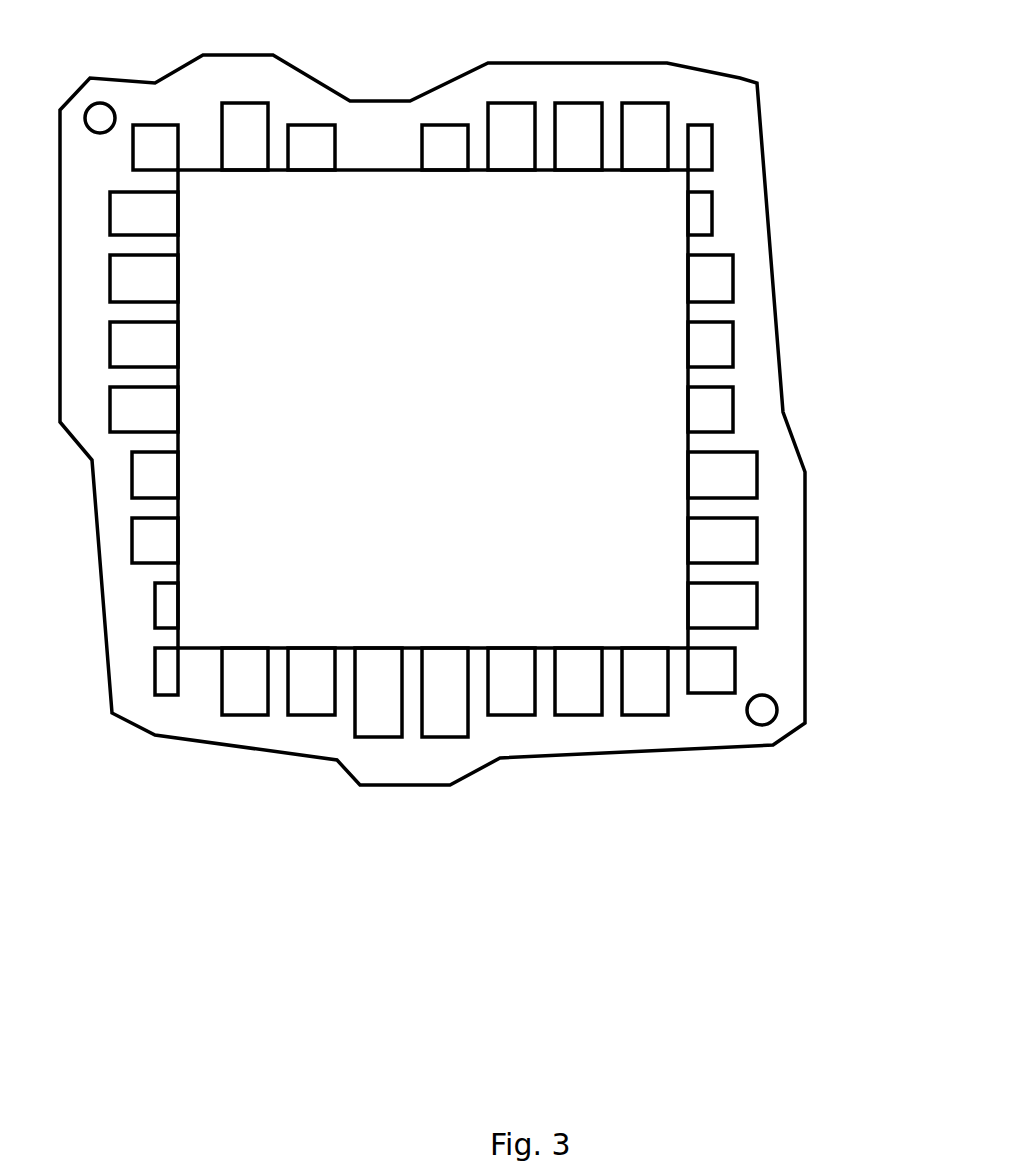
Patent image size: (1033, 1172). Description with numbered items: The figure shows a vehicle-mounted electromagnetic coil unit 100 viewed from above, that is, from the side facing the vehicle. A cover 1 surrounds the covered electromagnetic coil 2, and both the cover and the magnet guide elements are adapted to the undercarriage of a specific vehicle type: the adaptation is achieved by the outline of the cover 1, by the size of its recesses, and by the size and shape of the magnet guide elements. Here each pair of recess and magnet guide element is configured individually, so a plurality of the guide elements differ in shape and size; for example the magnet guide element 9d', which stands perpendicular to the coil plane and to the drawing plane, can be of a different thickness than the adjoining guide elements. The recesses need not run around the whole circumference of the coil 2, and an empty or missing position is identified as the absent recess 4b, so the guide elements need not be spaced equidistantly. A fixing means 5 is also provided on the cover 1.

The electromagnetic coil unit 100 is at (75, 727).
The cover 1 is at (805, 692).
The electromagnetic coil 2 is at (625, 362).
The absent recess 4b is at (368, 146).
The fixing means 5 is at (770, 720).
The magnet guide element 9d' is at (528, 757).